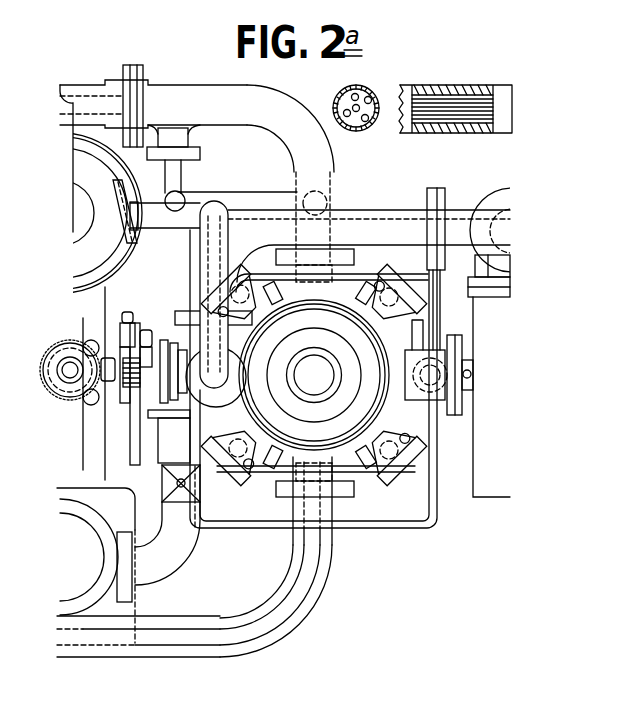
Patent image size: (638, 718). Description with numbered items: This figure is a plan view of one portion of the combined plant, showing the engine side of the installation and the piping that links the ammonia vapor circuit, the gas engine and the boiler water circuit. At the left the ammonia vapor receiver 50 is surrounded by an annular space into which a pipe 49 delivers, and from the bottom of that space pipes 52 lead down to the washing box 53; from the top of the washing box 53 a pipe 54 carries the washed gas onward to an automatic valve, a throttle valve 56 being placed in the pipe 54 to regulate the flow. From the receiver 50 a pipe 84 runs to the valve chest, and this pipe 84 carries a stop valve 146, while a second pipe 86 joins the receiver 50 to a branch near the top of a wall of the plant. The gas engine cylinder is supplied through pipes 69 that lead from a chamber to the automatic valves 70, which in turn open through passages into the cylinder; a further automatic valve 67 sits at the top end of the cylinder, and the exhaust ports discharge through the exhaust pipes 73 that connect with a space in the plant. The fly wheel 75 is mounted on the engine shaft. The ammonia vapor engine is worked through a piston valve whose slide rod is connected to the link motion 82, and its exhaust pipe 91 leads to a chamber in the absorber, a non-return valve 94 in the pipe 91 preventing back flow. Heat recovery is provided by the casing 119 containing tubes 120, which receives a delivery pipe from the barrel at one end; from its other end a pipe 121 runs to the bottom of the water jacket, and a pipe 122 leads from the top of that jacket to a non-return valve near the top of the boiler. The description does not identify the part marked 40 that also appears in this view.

The casing 119 is at (290, 128).
The tubes 120 is at (422, 89).
The exhaust pipes 73 is at (329, 576).
The pipe 86 is at (73, 165).
The pipe 121 is at (234, 192).
The ammonia vapor receiver 50 is at (63, 213).
The pipe 84 is at (214, 294).
The exhaust pipe 91 is at (320, 358).
The automatic valves 70 is at (387, 478).
The stop valve 146 is at (163, 342).
The pipes 69 is at (250, 449).
The non-return valve 94 is at (498, 298).
The pipe 49 is at (70, 389).
The gear 40 is at (76, 372).
The link motion 82 is at (136, 420).
The automatic valve 67 is at (439, 383).
The pipes 52 is at (94, 383).
The throttle valve 56 is at (176, 482).
The fly wheel 75 is at (489, 500).
The washing box 53 is at (105, 568).
The pipe 54 is at (167, 543).
The pipe 122 is at (218, 652).